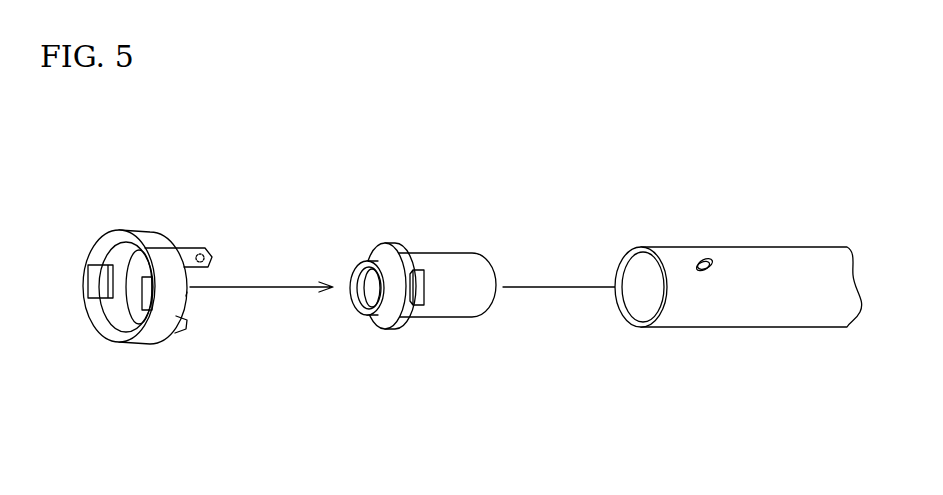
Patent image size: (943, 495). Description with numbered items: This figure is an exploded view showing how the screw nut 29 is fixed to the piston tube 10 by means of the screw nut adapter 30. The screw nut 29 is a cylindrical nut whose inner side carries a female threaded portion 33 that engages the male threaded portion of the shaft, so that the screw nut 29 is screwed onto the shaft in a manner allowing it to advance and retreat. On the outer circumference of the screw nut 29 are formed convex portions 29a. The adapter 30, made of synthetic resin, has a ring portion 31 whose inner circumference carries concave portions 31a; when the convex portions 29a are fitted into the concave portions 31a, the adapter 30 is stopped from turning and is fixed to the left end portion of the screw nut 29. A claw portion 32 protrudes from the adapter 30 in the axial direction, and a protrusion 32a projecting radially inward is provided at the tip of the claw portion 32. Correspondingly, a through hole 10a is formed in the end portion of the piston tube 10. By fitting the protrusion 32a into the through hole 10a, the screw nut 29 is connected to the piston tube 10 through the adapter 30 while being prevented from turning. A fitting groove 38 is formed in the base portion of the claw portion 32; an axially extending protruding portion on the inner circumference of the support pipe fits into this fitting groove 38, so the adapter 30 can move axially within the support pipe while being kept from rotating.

The piston tube 10 is at (738, 287).
The through hole 10a is at (708, 262).
The screw nut 29 is at (419, 306).
The convex portions 29a is at (425, 290).
The screw nut adapter 30 is at (153, 297).
The ring portion 31 is at (140, 232).
The concave portions 31a is at (148, 284).
The claw portion 32 is at (203, 250).
The protrusion 32a is at (188, 292).
The female threaded portion 33 is at (362, 293).
The fitting groove 38 is at (164, 252).